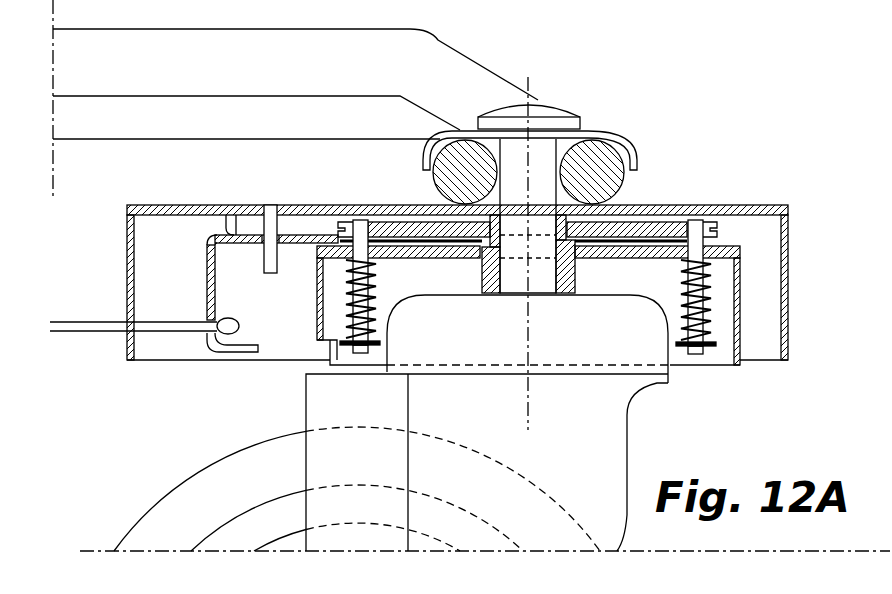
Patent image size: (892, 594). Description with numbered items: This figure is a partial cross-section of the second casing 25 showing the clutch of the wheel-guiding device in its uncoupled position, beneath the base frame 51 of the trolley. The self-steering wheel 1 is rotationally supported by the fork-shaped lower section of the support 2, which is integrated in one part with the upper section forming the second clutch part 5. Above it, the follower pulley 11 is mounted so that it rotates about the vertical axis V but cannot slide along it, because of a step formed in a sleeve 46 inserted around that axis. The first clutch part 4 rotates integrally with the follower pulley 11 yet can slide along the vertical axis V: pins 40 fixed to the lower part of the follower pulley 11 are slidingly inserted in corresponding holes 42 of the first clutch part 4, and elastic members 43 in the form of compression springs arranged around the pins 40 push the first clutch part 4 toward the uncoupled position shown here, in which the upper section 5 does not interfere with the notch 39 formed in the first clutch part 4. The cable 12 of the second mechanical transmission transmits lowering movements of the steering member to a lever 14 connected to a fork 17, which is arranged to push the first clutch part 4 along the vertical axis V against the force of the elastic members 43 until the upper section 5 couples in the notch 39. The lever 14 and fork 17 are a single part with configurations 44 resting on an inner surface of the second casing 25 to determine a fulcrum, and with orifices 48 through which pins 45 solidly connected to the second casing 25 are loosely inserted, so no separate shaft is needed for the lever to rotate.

The self-steering wheel 1 is at (185, 498).
The support 2 is at (613, 518).
The first clutch part 4 is at (738, 364).
The second clutch part / upper section 5 is at (310, 398).
The follower pulley 11 is at (660, 222).
The cable 12 is at (105, 320).
The lever 14 is at (206, 284).
The fork 17 is at (316, 232).
The second casing 25 is at (124, 240).
The notch 39 is at (330, 353).
The pins 40 is at (702, 360).
The holes 42 is at (718, 242).
The elastic members 43 is at (377, 276).
The configurations 44 is at (227, 223).
The pins 45 is at (263, 257).
The sleeve 46 is at (575, 277).
The orifices 48 is at (257, 240).
The base frame 51 is at (462, 72).
The vertical axis V is at (541, 322).